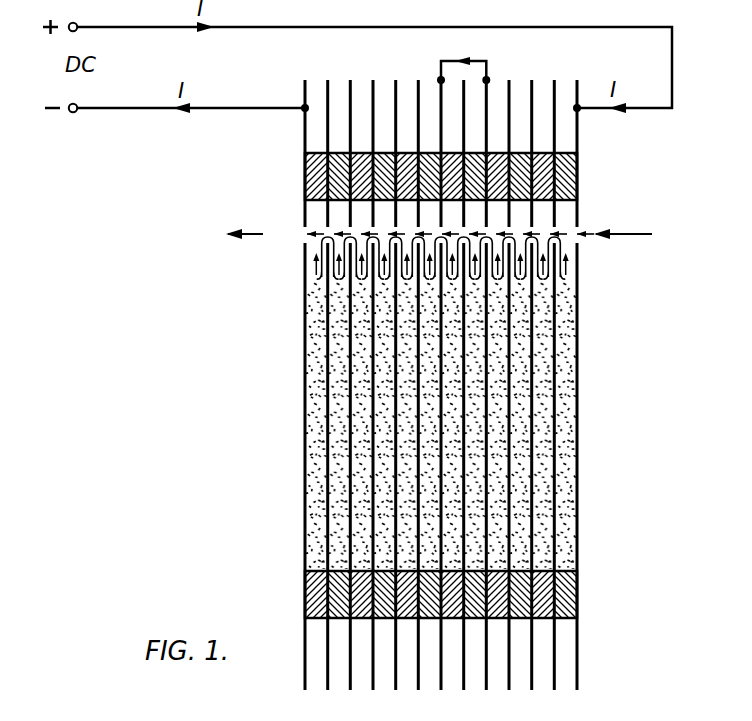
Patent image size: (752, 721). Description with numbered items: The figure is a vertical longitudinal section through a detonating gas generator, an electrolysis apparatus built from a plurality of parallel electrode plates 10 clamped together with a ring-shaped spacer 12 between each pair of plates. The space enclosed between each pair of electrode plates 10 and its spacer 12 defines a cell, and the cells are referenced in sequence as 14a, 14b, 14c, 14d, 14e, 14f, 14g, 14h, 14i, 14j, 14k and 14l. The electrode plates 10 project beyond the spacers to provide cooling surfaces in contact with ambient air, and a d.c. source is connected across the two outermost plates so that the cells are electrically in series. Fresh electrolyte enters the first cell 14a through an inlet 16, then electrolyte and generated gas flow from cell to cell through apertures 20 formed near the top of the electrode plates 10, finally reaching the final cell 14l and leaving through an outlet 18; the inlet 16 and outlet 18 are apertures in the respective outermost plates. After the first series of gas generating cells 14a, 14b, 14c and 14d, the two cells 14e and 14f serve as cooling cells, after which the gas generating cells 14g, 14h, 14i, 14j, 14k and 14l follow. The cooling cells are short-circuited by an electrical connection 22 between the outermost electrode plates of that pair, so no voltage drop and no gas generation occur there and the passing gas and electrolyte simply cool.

The electrode plates 10 is at (535, 492).
The ring-shaped spacer 12 is at (540, 597).
The first cell 14a is at (565, 411).
The gas generating cell 14b is at (545, 384).
The gas generating cell 14c is at (518, 356).
The gas generating cell 14d is at (495, 332).
The cooling cell 14e is at (475, 311).
The cooling cell 14f is at (450, 424).
The gas generating cell 14g is at (428, 428).
The gas generating cell 14h is at (407, 425).
The gas generating cell 14i is at (384, 425).
The gas generating cell 14j is at (361, 425).
The gas generating cell 14k is at (339, 425).
The final cell 14l is at (318, 413).
The inlet 16 is at (587, 231).
The outlet 18 is at (306, 232).
The apertures 20 is at (373, 235).
The electrical connection 22 is at (489, 70).